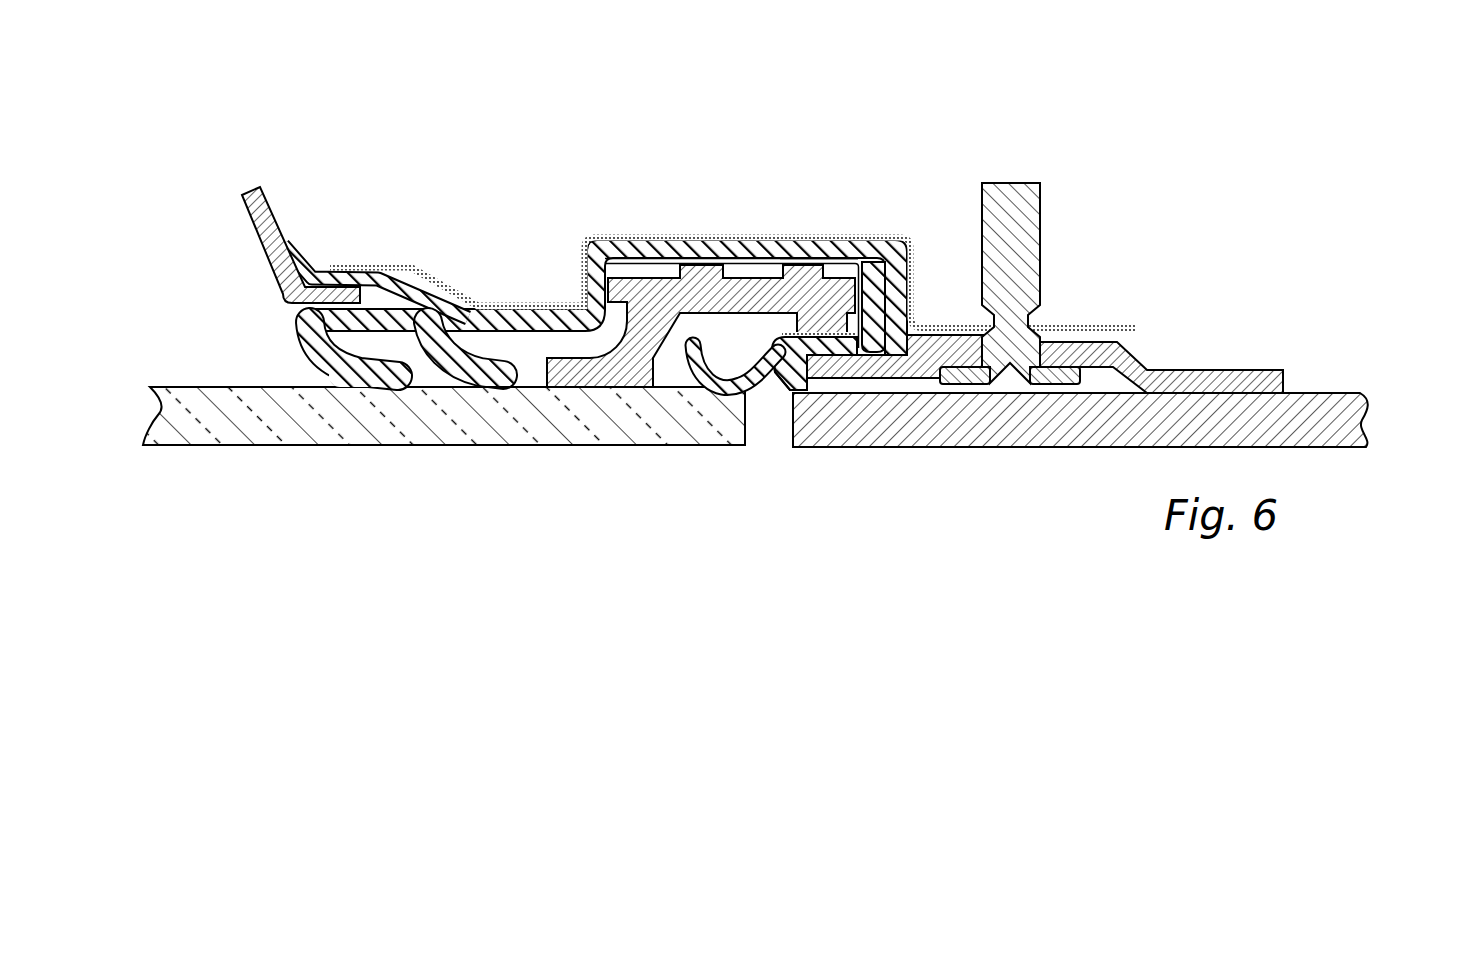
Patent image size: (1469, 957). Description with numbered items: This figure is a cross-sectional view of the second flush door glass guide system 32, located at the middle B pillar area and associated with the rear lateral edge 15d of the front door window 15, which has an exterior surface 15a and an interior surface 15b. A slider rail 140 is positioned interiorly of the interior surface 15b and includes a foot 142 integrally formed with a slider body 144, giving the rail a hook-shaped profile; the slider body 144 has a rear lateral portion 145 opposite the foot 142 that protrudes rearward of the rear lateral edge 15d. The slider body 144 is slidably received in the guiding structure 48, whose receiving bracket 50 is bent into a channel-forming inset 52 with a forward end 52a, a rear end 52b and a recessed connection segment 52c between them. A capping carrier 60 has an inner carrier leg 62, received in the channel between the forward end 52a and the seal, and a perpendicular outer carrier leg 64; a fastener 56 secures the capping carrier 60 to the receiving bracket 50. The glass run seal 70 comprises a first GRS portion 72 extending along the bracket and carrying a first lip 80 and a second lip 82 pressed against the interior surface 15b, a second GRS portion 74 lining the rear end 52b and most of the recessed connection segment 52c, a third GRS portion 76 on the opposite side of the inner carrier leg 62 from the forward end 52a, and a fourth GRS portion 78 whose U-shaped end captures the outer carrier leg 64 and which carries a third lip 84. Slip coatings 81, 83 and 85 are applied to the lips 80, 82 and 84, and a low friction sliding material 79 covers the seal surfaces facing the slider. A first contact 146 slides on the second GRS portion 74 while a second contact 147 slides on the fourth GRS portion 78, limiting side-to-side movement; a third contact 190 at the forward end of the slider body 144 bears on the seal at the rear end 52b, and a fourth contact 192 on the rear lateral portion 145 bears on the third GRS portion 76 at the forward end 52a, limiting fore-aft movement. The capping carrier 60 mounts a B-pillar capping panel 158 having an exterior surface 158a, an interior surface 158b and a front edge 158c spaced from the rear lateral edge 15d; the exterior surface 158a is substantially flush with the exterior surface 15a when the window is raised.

The front door window 15 is at (432, 433).
The exterior surface of the front door window 15a is at (162, 446).
The interior surface of the front door window 15b is at (160, 387).
The rear lateral edge of the front door window 15d is at (741, 414).
The second flush door glass guide system 32 is at (357, 112).
The guiding structure 48 is at (553, 224).
The receiving bracket 50 is at (417, 267).
The channel-forming inset 52 is at (634, 247).
The forward end of the channel-forming inset 52a is at (917, 271).
The rear end of the channel-forming inset 52b is at (582, 270).
The recessed connection segment 52c is at (609, 237).
The fastener 56 is at (1011, 192).
The capping carrier 60 is at (1146, 358).
The inner carrier leg 62 is at (900, 236).
The outer carrier leg 64 is at (882, 366).
The glass run seal 70 is at (745, 261).
The first GRS portion 72 is at (474, 306).
The second GRS portion 74 is at (738, 205).
The third GRS portion 76 is at (868, 297).
The fourth GRS portion 78 is at (781, 421).
The low friction sliding material 79 is at (704, 297).
The first lip 80 is at (320, 353).
The slip coating 81 is at (352, 384).
The second lip 82 is at (500, 372).
The slip coating 83 is at (458, 389).
The third lip 84 is at (768, 365).
The slip coating 85 is at (697, 368).
The slider rail 140 is at (660, 297).
The foot 142 is at (572, 368).
The slider body 144 is at (687, 312).
The rear lateral portion 145 is at (816, 257).
The first contact 146 is at (812, 295).
The second contact 147 is at (800, 322).
The B-pillar capping panel 158 is at (1125, 425).
The exterior surface of the capping panel 158a is at (990, 448).
The interior surface of the capping panel 158b is at (1330, 392).
The front edge of the capping panel 158c is at (796, 441).
The third contact 190 is at (668, 286).
The fourth contact 192 is at (900, 269).